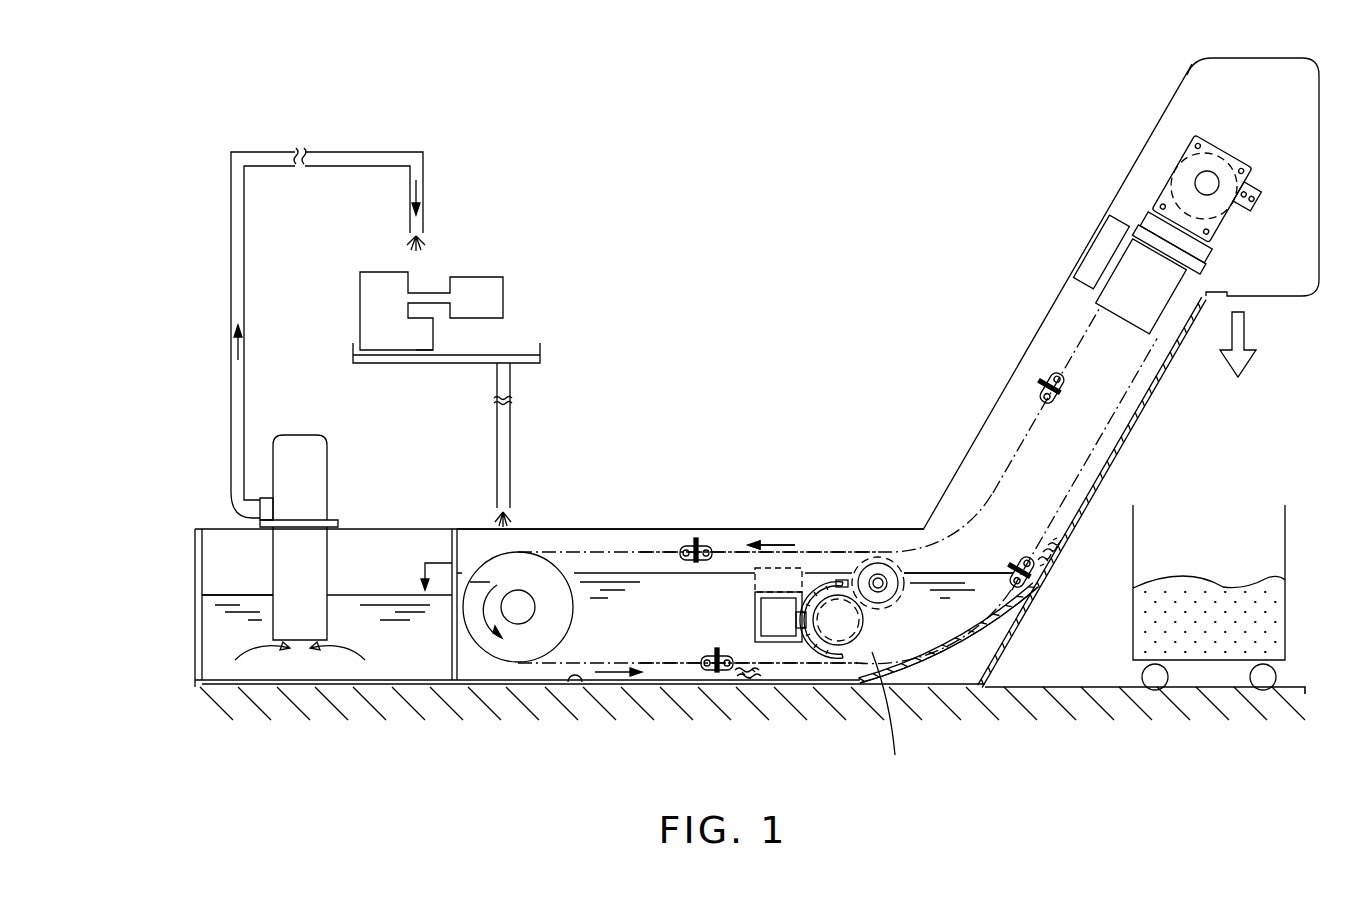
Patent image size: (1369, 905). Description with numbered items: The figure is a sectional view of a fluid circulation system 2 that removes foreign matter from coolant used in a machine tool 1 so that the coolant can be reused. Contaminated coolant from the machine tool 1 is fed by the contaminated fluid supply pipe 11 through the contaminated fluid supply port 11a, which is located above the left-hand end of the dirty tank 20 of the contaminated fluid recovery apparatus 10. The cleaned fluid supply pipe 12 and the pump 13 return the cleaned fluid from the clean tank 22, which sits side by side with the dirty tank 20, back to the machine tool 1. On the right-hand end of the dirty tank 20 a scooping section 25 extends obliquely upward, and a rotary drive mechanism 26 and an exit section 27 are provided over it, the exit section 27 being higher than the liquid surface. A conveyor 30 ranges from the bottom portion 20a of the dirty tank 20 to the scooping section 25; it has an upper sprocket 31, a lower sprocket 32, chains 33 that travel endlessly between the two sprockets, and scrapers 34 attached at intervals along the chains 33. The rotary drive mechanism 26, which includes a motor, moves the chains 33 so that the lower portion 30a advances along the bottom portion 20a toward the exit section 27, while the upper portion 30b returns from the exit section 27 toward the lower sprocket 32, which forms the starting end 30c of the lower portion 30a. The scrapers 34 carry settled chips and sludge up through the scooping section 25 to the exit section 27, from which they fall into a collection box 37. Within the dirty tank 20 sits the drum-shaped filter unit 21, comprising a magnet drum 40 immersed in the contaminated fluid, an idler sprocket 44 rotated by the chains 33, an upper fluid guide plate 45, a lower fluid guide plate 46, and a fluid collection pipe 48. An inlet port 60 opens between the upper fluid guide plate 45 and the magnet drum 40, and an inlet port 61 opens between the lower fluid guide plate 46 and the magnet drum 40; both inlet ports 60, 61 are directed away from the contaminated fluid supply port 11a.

The machine tool 1 is at (524, 282).
The fluid circulation system 2 is at (667, 273).
The contaminated fluid recovery apparatus 10 is at (679, 433).
The contaminated fluid supply pipe 11 is at (511, 450).
The contaminated fluid supply port 11a is at (490, 512).
The cleaned fluid supply pipe 12 is at (231, 236).
The pump 13 is at (328, 462).
The dirty tank 20 is at (633, 530).
The bottom portion 20a is at (574, 684).
The drum-shaped filter unit 21 is at (872, 652).
The clean tank 22 is at (392, 529).
The scooping section 25 is at (1145, 413).
The rotary drive mechanism 26 is at (1192, 147).
The exit section 27 is at (1272, 297).
The conveyor 30 is at (628, 545).
The lower portion 30a is at (822, 668).
The upper portion 30b is at (744, 552).
The starting end 30c is at (518, 663).
The upper sprocket 31 is at (1218, 165).
The lower sprocket 32 is at (495, 660).
The chains 33 is at (1013, 452).
The scrapers 34 is at (693, 540).
The collection box 37 is at (1286, 545).
The magnet drum 40 is at (896, 630).
The idler sprocket 44 is at (881, 558).
The upper fluid guide plate 45 is at (838, 580).
The lower fluid guide plate 46 is at (810, 656).
The fluid collection pipe 48 is at (755, 608).
The inlet port 60 is at (850, 583).
The inlet port 61 is at (860, 660).